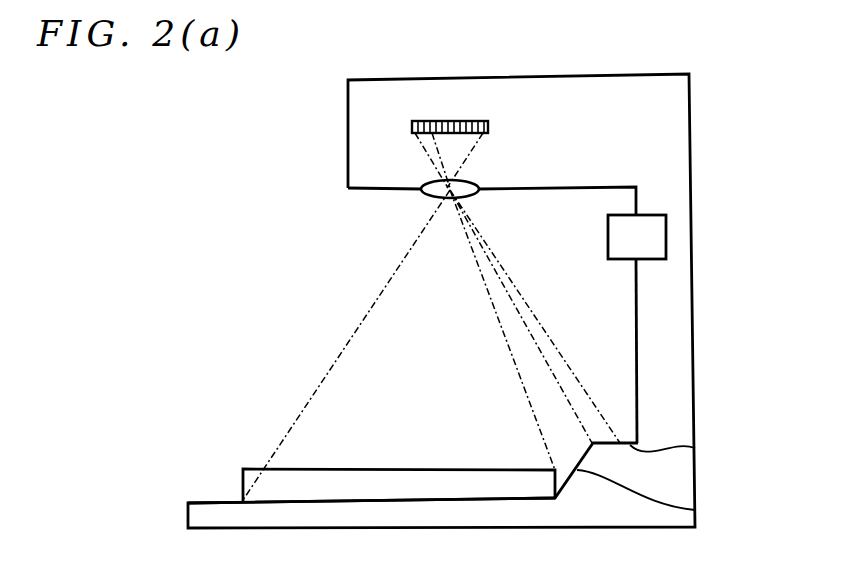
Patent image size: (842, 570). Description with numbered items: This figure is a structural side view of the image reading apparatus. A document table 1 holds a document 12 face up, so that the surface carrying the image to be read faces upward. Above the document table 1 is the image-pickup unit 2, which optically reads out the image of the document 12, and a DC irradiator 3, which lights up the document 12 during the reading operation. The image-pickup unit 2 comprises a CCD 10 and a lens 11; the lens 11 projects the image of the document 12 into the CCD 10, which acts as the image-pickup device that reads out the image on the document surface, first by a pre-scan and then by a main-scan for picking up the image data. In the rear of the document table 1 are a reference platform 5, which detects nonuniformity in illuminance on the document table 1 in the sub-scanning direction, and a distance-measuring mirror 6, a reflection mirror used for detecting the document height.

The document table 1 is at (228, 502).
The image-pickup unit 2 is at (433, 79).
The DC irradiator 3 is at (657, 218).
The reference platform 5 is at (695, 448).
The distance-measuring mirror 6 is at (695, 510).
The CCD 10 is at (488, 123).
The lens 11 is at (428, 197).
The document 12 is at (243, 465).